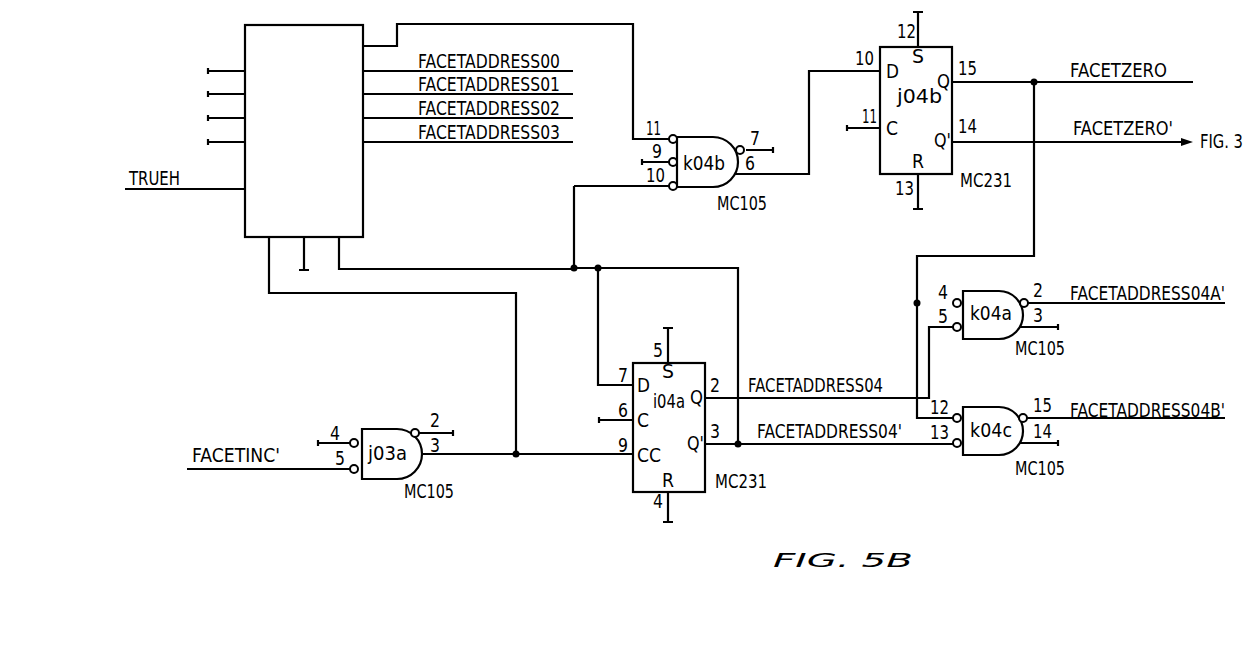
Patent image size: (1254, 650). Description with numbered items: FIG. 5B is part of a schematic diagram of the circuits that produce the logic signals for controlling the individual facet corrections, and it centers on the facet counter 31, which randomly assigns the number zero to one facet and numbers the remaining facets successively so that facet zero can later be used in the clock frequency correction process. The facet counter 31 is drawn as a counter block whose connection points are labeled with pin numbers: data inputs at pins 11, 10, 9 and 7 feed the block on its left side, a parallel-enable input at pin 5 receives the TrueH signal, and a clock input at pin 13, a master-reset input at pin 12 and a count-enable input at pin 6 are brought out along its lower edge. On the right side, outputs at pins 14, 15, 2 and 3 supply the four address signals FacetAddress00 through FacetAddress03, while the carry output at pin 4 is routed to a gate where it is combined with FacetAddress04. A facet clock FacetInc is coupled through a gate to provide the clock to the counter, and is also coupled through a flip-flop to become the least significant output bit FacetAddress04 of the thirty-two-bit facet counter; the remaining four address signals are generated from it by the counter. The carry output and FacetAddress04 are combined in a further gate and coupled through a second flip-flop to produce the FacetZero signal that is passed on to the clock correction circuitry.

The facet counter 31 is at (363, 193).
The counter D0 input pin 11 is at (226, 60).
The counter D1 input pin 10 is at (226, 83).
The counter D2 input pin 9 is at (226, 107).
The counter D3 input pin 7 is at (226, 130).
The counter PE' input pin 5 is at (185, 176).
The counter C0' carry output pin 4 is at (516, 81).
The counter H0 output pin 14 is at (468, 58).
The counter H1 output pin 15 is at (468, 81).
The counter H2 output pin 2 is at (468, 105).
The counter H3 output pin 3 is at (468, 129).
The counter clock input pin 13 is at (381, 345).
The counter master reset pin 12 is at (296, 253).
The counter CE' input pin 6 is at (448, 252).